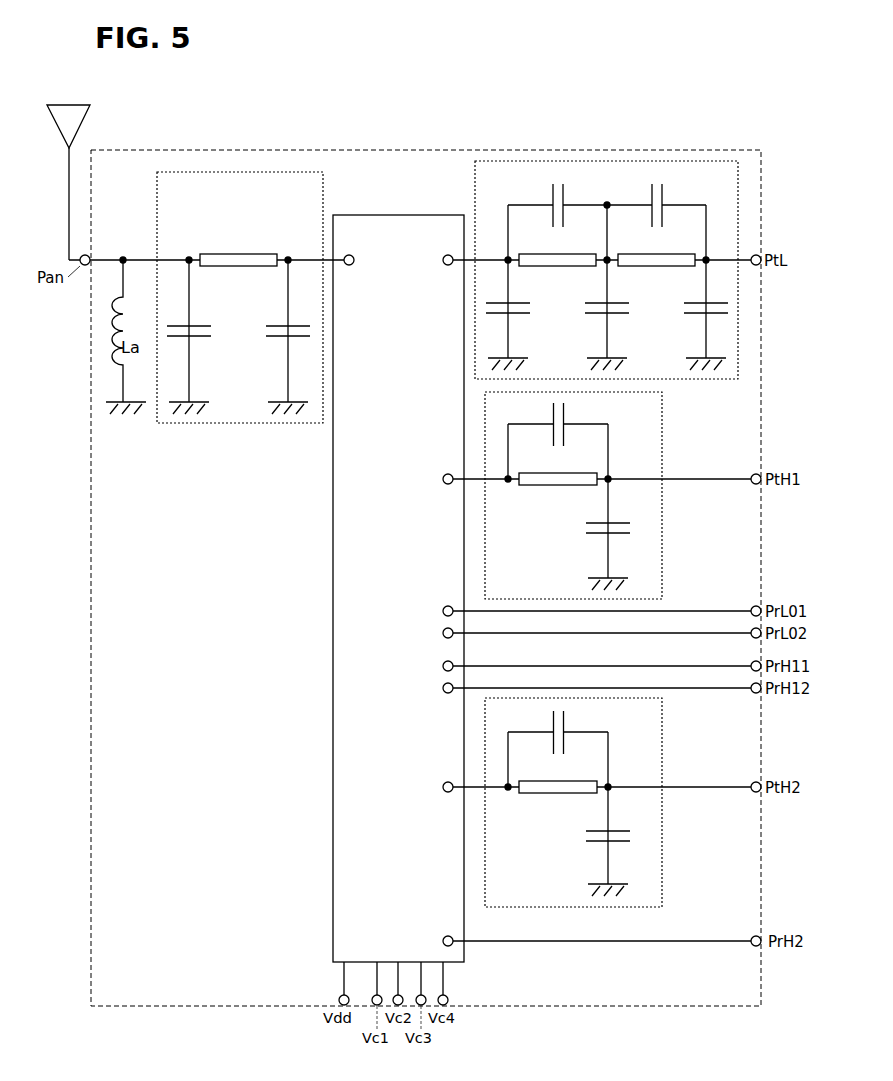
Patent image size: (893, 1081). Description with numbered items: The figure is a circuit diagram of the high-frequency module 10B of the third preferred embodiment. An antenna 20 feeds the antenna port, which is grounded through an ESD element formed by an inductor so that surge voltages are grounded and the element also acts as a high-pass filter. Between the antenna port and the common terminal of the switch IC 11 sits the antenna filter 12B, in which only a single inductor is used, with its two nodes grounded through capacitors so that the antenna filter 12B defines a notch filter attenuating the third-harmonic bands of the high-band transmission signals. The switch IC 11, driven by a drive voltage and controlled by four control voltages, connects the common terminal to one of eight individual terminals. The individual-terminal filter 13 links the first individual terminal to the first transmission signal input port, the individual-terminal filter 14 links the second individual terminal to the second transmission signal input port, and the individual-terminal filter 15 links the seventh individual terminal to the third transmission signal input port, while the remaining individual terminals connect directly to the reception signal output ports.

The antenna 20 is at (79, 105).
The high-frequency module 10B is at (720, 150).
The antenna filter 12B is at (322, 193).
The switch IC 11 is at (428, 214).
The individual-terminal filter 13 is at (740, 188).
The individual-terminal filter 14 is at (664, 417).
The individual-terminal filter 15 is at (664, 724).